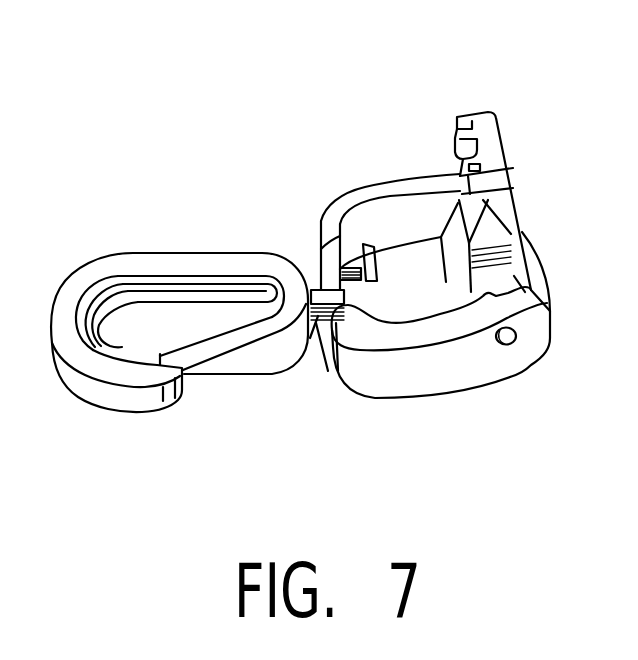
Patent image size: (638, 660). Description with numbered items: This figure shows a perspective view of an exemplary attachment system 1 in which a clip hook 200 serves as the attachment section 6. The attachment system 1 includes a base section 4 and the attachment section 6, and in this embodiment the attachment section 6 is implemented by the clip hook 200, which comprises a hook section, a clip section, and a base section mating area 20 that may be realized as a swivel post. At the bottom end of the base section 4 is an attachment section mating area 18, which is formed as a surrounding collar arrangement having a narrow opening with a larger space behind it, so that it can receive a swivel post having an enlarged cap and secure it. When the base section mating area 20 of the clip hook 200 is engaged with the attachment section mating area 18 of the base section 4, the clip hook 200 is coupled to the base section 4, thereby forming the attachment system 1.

The attachment system 1 is at (399, 100).
The base section 4 is at (488, 388).
The attachment section 6 is at (233, 376).
The attachment section mating area 18 is at (333, 352).
The base section mating area 20 is at (320, 288).
The clip hook 200 is at (131, 252).